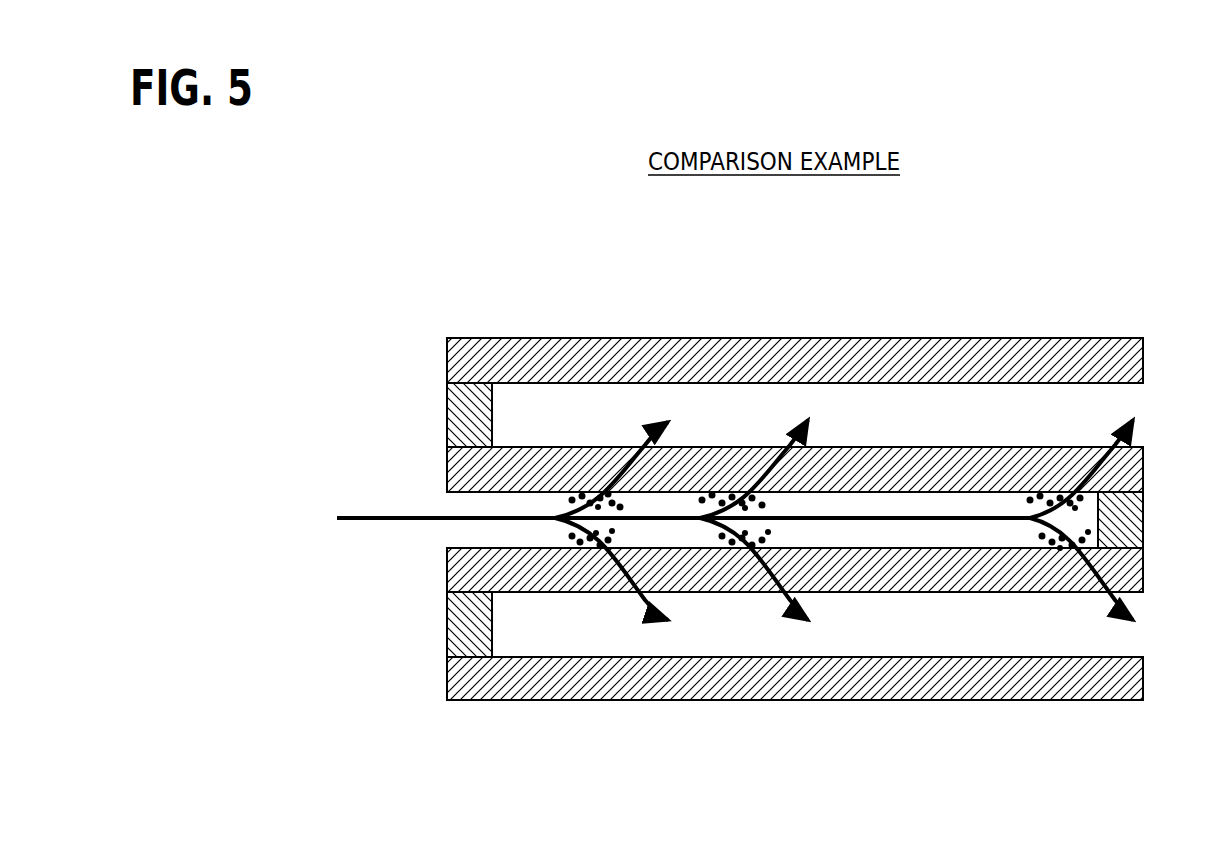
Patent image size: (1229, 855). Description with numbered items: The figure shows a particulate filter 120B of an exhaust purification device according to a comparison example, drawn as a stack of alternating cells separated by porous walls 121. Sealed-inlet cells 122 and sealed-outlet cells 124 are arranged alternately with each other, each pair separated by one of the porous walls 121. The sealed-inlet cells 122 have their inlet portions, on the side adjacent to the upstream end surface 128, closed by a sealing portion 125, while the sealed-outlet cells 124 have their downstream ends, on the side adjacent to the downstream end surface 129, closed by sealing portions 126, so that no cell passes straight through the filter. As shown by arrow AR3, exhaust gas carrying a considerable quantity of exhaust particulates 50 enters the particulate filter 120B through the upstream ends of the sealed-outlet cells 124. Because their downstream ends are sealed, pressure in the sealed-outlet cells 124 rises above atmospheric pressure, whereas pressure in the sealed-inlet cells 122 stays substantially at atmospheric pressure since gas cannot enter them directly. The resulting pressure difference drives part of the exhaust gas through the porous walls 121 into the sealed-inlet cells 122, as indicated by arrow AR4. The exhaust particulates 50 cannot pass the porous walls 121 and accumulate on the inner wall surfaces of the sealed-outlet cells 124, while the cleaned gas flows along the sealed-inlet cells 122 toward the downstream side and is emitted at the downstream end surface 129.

The particulate filter 120B is at (872, 300).
The porous walls 121 is at (1032, 338).
The sealed-inlet cells 122 is at (565, 410).
The sealed-outlet cells 124 is at (530, 505).
The sealing portion 125 is at (447, 413).
The sealing portions 126 is at (1127, 520).
The upstream end surface 128 is at (447, 350).
The downstream end surface 129 is at (1148, 357).
The exhaust particulates 50 is at (630, 497).
The arrow AR3 is at (380, 520).
The arrow AR4 is at (628, 428).